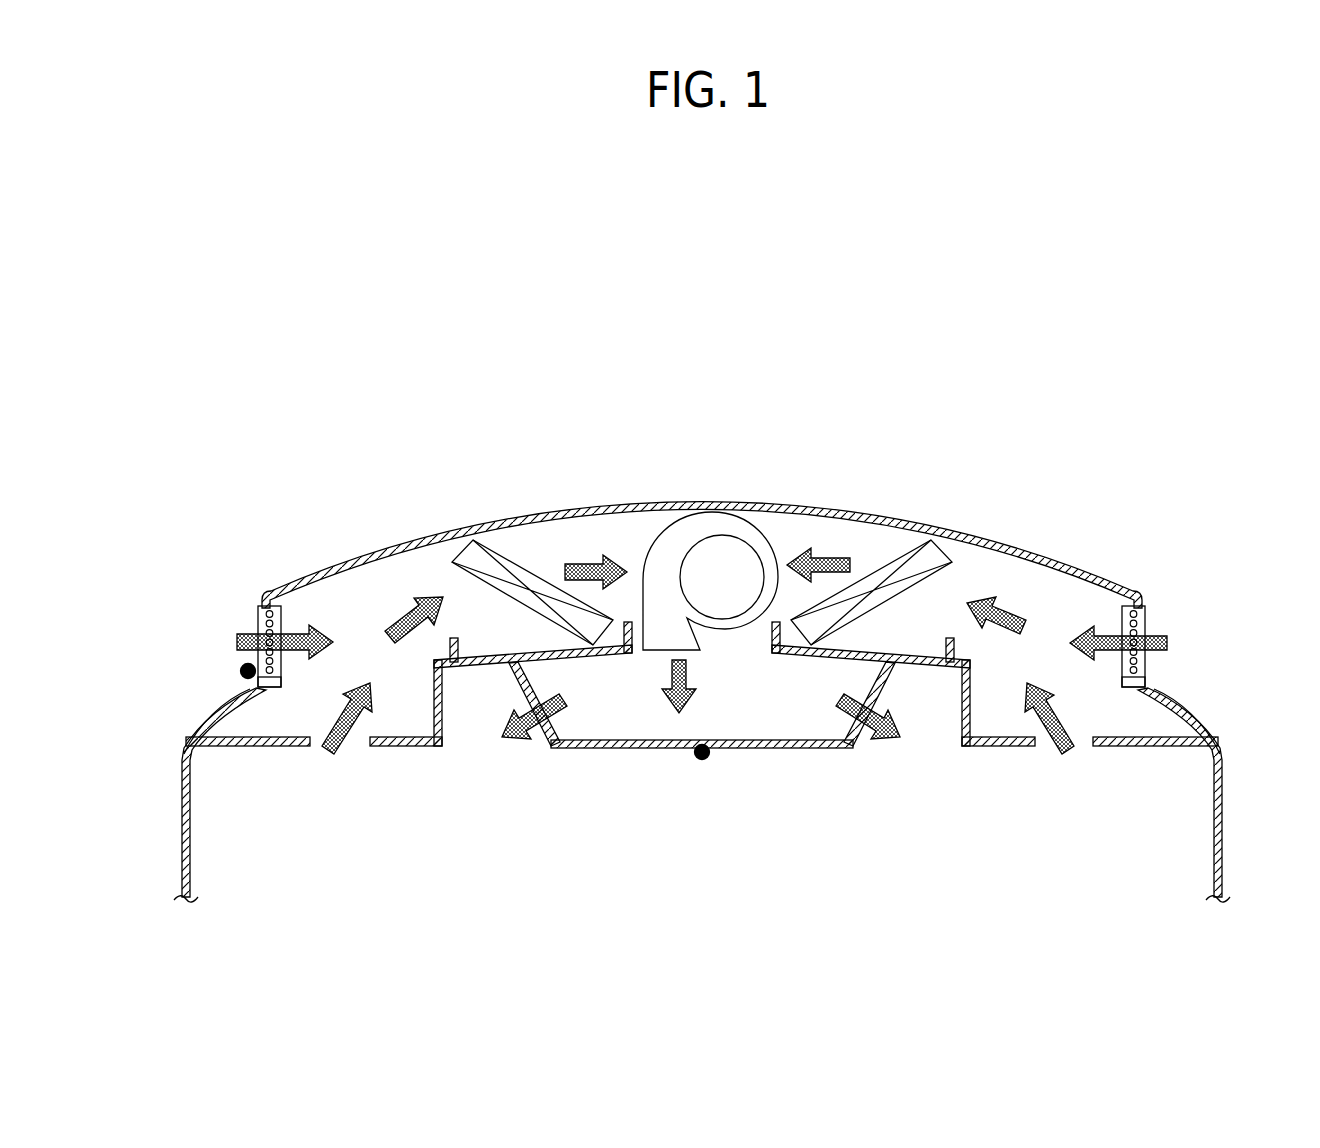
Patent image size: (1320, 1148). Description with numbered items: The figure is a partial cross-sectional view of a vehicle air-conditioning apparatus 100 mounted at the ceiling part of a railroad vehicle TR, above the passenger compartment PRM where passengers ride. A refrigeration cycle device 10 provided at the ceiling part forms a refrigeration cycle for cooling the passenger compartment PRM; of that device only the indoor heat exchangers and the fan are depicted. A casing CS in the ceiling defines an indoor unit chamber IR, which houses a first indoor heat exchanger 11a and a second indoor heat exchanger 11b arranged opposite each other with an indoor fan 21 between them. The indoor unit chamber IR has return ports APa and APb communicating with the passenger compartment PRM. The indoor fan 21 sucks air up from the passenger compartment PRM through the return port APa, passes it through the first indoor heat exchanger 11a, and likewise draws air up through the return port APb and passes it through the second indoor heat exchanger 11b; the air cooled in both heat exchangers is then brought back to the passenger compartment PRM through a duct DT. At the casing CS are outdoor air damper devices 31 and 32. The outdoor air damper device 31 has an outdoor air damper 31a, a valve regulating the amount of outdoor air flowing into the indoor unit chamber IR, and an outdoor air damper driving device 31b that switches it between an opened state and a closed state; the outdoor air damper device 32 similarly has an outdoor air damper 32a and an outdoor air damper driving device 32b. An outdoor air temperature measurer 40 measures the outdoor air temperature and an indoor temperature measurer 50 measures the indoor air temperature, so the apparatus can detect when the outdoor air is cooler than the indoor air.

The vehicle air-conditioning apparatus 100 is at (700, 308).
The refrigeration cycle device 10 is at (892, 547).
The first indoor heat exchanger 11a is at (473, 540).
The second indoor heat exchanger 11b is at (934, 540).
The indoor fan 21 is at (718, 522).
The outdoor air damper device 31 is at (196, 641).
The outdoor air damper 31a is at (257, 614).
The outdoor air damper driving device 31b is at (272, 690).
The outdoor air damper device 32 is at (1208, 646).
The outdoor air damper 32a is at (1147, 615).
The outdoor air damper driving device 32b is at (1134, 690).
The outdoor air temperature measurer 40 is at (240, 675).
The indoor temperature measurer 50 is at (703, 760).
The railroad vehicle TR is at (1010, 547).
The casing CS is at (362, 556).
The indoor unit chamber IR is at (342, 613).
The return port APa is at (358, 755).
The return port APb is at (1043, 755).
The duct DT is at (612, 750).
The passenger compartment PRM is at (669, 933).